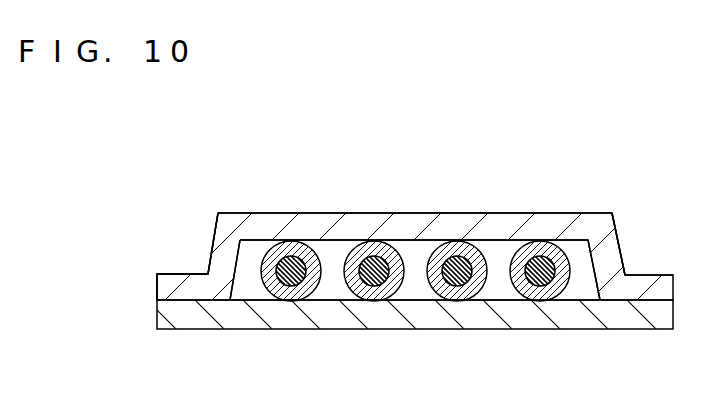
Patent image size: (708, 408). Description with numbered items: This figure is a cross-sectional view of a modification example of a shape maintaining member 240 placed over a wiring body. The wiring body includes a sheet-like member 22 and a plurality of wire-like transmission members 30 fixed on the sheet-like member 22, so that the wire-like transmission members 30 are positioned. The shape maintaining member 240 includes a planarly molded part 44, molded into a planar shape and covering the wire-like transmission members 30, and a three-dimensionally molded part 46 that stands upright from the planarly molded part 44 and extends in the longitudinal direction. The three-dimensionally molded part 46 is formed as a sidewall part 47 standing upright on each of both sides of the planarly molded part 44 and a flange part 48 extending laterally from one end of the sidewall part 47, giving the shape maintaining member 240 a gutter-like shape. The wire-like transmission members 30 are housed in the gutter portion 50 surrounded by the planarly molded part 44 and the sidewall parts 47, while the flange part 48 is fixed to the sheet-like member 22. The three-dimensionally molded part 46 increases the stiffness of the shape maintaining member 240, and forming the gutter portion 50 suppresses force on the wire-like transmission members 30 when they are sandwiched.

The sheet-like member 22 is at (413, 318).
The wire-like transmission member 30 is at (350, 250).
The planarly molded part 44 is at (582, 230).
The three-dimensionally molded part 46 is at (125, 204).
The sidewall part 47 is at (218, 262).
The flange part 48 is at (173, 273).
The gutter portion 50 is at (663, 162).
The shape maintaining member 240 is at (447, 228).